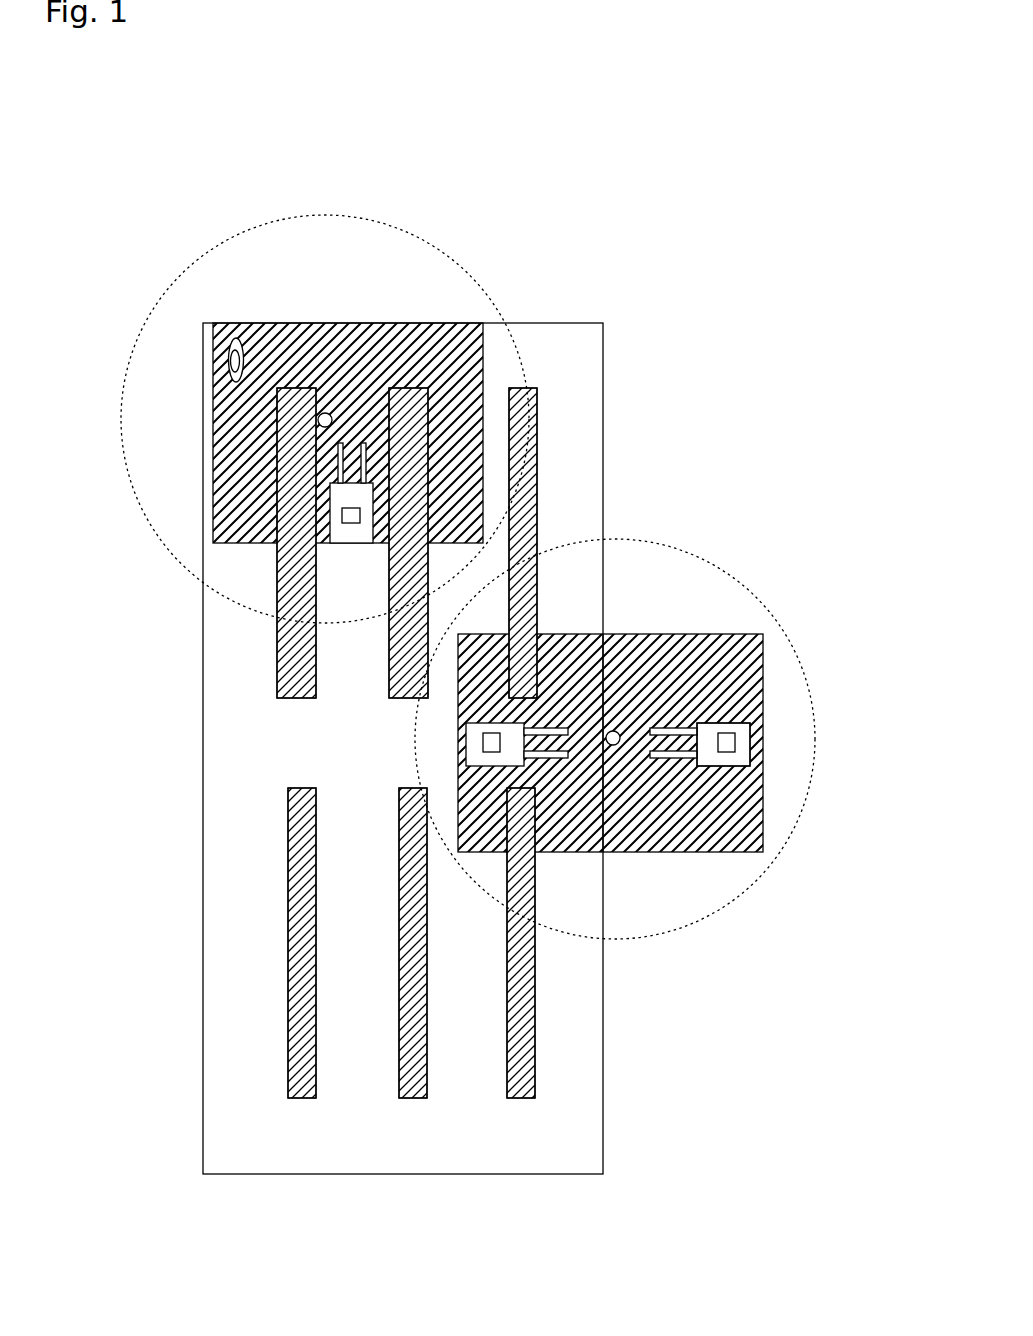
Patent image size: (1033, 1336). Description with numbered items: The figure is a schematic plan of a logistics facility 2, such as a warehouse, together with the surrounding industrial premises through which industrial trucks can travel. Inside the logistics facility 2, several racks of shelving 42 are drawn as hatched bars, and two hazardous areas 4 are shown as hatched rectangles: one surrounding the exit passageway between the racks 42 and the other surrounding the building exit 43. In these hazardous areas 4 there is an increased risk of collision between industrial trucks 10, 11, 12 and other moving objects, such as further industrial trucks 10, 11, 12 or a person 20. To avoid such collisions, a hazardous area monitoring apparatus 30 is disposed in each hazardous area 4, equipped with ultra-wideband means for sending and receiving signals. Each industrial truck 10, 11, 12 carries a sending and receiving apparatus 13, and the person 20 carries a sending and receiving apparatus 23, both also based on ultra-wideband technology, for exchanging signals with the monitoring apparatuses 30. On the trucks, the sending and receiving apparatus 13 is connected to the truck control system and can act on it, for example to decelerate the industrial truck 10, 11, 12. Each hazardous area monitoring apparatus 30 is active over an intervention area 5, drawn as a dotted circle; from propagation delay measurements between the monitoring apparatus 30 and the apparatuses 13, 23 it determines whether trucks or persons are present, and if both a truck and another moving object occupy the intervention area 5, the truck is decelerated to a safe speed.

The logistics facility 2 is at (535, 281).
The hazardous area 4 is at (453, 325).
The intervention area 5 is at (425, 248).
The industrial truck 10 is at (330, 507).
The industrial truck 11 is at (512, 757).
The industrial truck 12 is at (703, 733).
The sending and receiving apparatus 13 is at (342, 518).
The person 20 is at (226, 355).
The sending and receiving apparatus 23 is at (268, 325).
The hazardous area monitoring apparatus 30 is at (327, 413).
The rack of shelving 42 is at (509, 605).
The building exit 43 is at (727, 752).